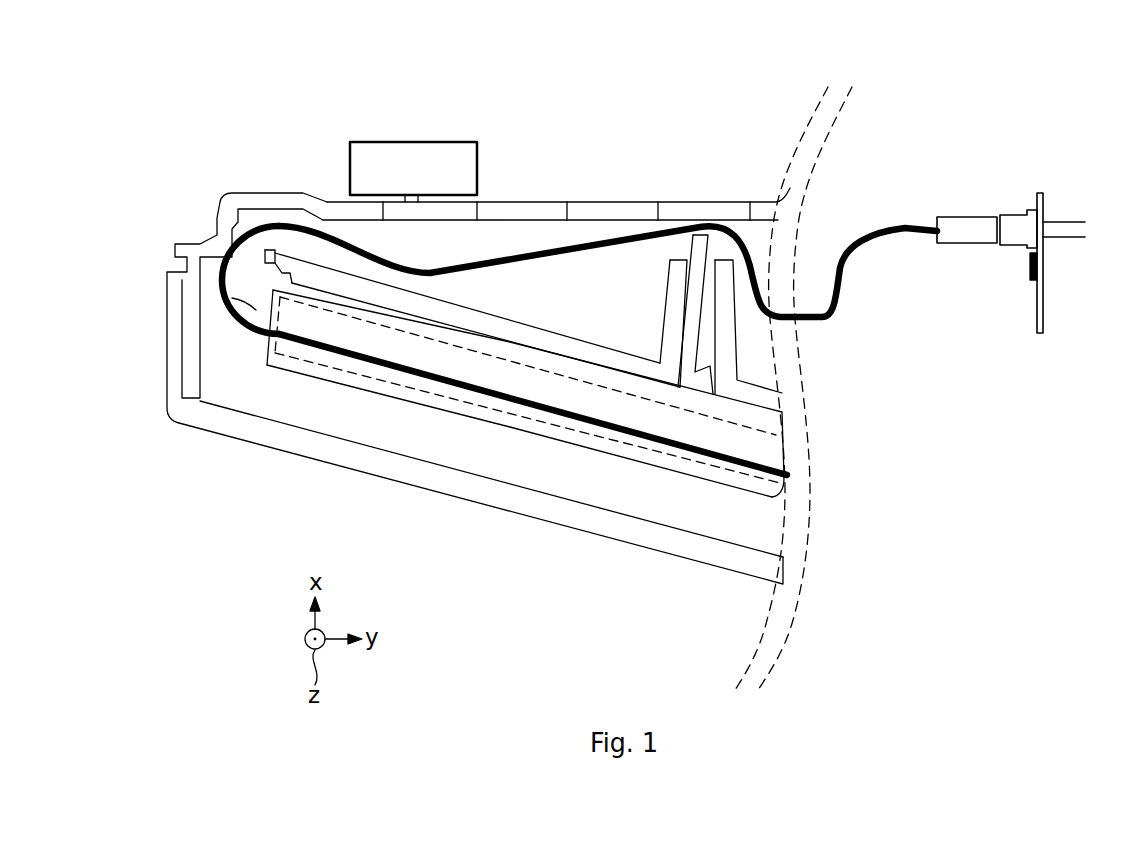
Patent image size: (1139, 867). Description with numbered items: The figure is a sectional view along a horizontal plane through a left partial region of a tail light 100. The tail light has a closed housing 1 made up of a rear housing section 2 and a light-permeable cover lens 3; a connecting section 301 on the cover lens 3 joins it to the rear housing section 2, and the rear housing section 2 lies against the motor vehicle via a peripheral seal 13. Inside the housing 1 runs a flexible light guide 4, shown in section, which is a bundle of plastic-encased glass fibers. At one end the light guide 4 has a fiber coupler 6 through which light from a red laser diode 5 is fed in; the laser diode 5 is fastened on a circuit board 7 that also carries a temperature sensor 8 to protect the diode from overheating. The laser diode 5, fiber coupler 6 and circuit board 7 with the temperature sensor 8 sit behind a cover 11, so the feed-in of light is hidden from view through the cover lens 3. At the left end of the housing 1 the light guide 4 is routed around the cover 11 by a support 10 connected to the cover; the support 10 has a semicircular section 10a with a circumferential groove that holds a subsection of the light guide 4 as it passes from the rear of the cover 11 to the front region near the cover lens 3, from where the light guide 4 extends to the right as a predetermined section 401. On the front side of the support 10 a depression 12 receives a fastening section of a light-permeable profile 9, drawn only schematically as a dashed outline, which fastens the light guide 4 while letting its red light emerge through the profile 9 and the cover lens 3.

The tail light 100 is at (588, 86).
The housing 1 is at (554, 202).
The rear housing section 2 is at (648, 213).
The cover lens 3 is at (430, 488).
The connecting section 301 is at (190, 362).
The light guide 4 is at (566, 248).
The laser diode 5 is at (1010, 214).
The fiber coupler 6 is at (966, 217).
The circuit board 7 is at (1046, 275).
The temperature sensor 8 is at (1028, 266).
The profile 9 is at (768, 450).
The support 10 is at (603, 372).
The semicircular section of the support 10a is at (232, 298).
The cover 11 is at (465, 315).
The depression 12 is at (272, 292).
The seal 13 is at (419, 142).
The predetermined section of the light guide 401 is at (513, 430).